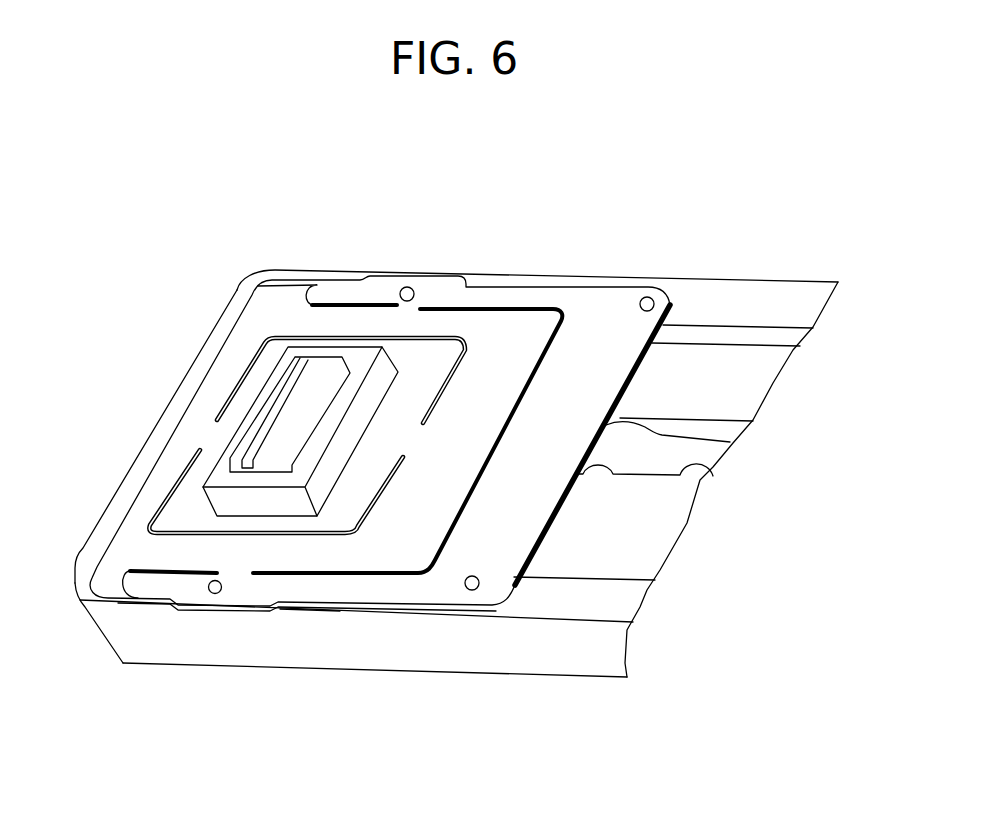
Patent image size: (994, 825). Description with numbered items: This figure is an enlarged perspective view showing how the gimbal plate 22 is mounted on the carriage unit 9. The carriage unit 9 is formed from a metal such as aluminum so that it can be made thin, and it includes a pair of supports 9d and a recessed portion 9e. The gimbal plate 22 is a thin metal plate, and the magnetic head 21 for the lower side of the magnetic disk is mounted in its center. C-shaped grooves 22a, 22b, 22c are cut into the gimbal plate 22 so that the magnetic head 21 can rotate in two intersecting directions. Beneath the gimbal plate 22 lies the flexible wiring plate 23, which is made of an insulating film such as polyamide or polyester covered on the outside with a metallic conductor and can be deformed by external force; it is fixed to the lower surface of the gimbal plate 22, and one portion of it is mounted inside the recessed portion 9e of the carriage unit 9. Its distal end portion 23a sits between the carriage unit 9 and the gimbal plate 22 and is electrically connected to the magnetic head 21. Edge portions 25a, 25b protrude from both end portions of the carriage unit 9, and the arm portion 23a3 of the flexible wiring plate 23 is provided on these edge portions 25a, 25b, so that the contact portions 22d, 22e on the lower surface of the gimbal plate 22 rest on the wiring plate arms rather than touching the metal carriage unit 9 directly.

The carriage unit 9 is at (532, 658).
The supports 9d is at (102, 577).
The recessed portion 9e is at (714, 466).
The magnetic head 21 is at (268, 393).
The gimbal plate 22 is at (557, 288).
The C-shaped groove 22a is at (508, 435).
The C-shaped groove 22b is at (358, 530).
The C-shaped groove 22c is at (450, 388).
The contact portion 22d is at (262, 593).
The contact portion 22e is at (467, 295).
The flexible wiring plate 23 is at (620, 449).
The distal end portion 23a is at (563, 515).
The arm portion 23a3 is at (308, 608).
The edge portion 25a is at (760, 287).
The edge portion 25b is at (620, 603).